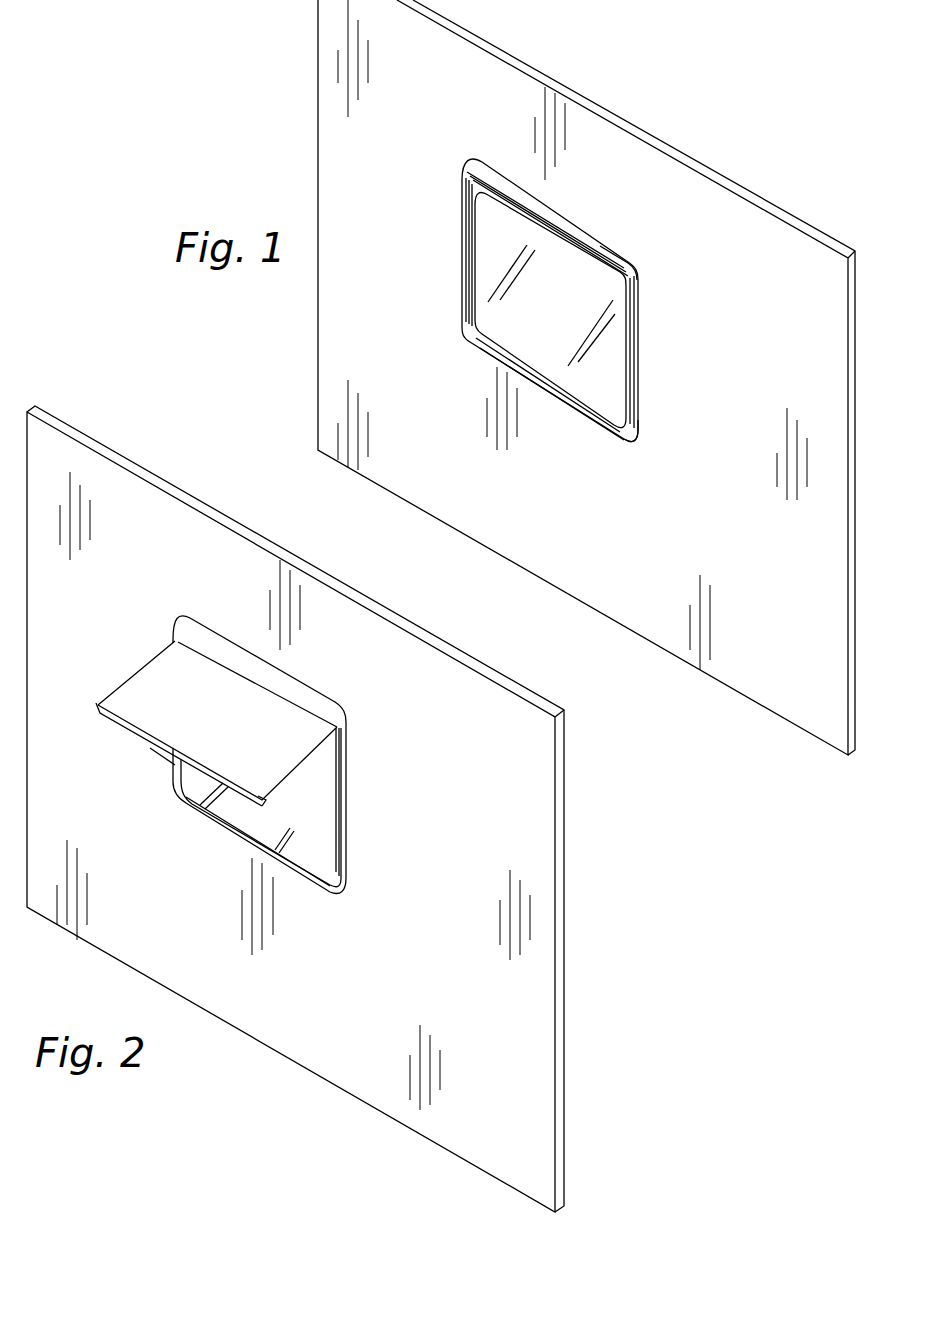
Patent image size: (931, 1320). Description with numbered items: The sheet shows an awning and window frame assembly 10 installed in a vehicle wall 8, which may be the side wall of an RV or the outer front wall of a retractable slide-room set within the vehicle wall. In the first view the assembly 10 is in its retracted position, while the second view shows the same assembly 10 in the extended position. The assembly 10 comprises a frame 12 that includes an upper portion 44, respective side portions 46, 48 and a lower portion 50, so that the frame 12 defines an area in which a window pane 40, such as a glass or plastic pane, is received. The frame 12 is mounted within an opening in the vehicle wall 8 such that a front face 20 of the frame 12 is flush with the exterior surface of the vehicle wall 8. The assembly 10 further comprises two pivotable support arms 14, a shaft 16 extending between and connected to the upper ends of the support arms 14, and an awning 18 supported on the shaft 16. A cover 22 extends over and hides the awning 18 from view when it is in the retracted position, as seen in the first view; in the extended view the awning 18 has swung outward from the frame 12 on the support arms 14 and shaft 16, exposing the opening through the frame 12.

In FIG. 1, the vehicle wall 8 is at (752, 328).
In FIG. 2, the vehicle wall 8 is at (476, 833).
In FIG. 1, the awning and window frame assembly 10 is at (602, 206).
In FIG. 2, the awning and window frame assembly 10 is at (346, 686).
In FIG. 1, the frame 12 is at (640, 434).
In FIG. 2, the pivotable support arms 14 is at (148, 750).
In FIG. 2, the shaft 16 is at (262, 802).
In FIG. 2, the awning 18 is at (147, 688).
In FIG. 1, the front face 20 is at (627, 440).
In FIG. 2, the front face 20 is at (338, 893).
In FIG. 1, the cover 22 is at (612, 246).
In FIG. 2, the cover 22 is at (295, 690).
In FIG. 1, the window pane 40 is at (567, 315).
In FIG. 1, the upper portion 44 is at (496, 166).
In FIG. 1, the side portion 46 is at (458, 238).
In FIG. 1, the side portion 48 is at (645, 314).
In FIG. 1, the lower portion 50 is at (540, 402).